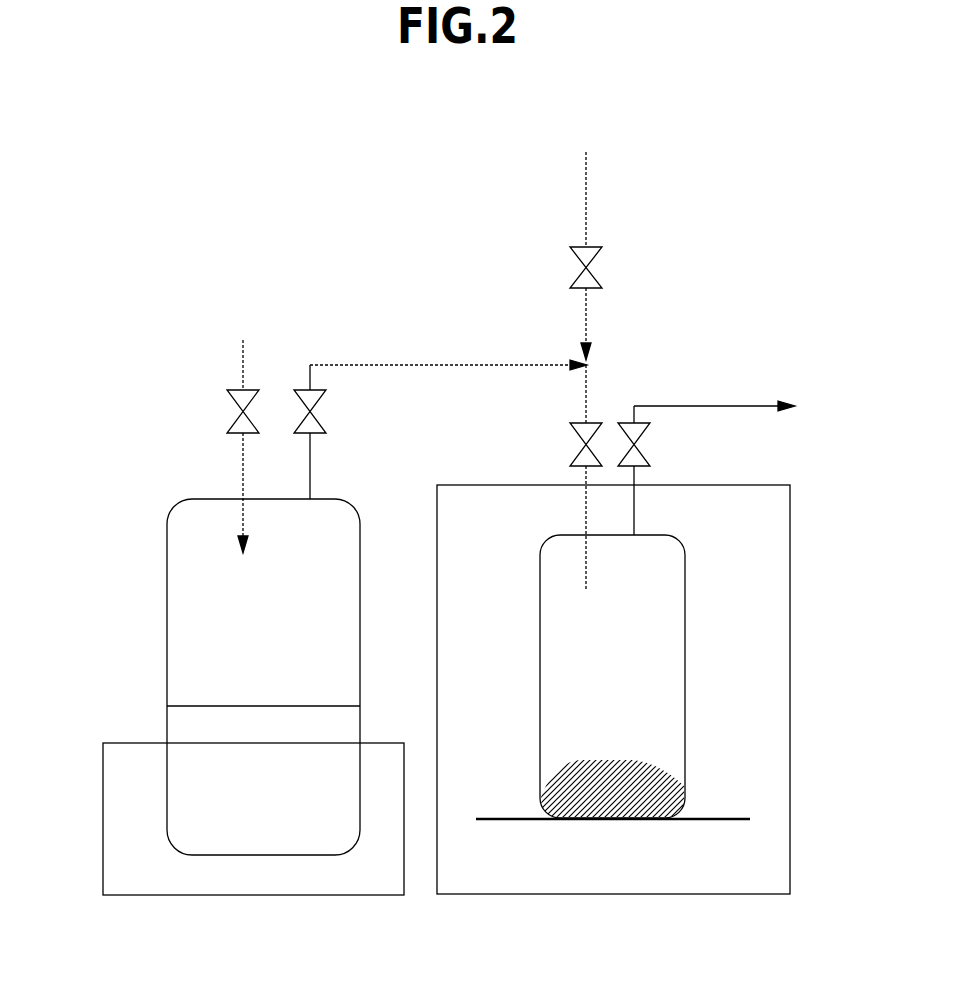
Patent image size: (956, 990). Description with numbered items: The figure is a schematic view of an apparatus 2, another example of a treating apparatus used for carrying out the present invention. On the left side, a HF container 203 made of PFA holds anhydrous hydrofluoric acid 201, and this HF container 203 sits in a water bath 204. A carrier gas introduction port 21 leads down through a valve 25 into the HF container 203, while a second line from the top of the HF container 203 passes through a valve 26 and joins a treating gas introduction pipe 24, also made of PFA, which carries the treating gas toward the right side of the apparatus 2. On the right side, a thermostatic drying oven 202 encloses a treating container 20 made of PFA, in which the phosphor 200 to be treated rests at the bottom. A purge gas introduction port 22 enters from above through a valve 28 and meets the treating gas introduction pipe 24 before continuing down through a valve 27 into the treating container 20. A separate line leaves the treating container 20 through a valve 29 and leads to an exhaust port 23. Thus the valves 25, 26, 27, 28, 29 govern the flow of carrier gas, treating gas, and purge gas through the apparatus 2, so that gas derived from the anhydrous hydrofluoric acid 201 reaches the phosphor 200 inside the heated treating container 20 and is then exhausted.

The apparatus 2 is at (150, 150).
The treating container 20 is at (686, 609).
The carrier gas introduction port 21 is at (242, 433).
The purge gas introduction port 22 is at (587, 358).
The exhaust port 23 is at (729, 408).
The treating gas introduction pipe 24 is at (445, 365).
The valve 25 is at (228, 411).
The valve 26 is at (326, 408).
The valve 27 is at (575, 440).
The valve 28 is at (598, 273).
The valve 29 is at (648, 432).
The phosphor 200 is at (640, 783).
The anhydrous hydrofluoric acid 201 is at (248, 757).
The thermostatic drying oven 202 is at (790, 718).
The HF container 203 is at (167, 634).
The water bath 204 is at (130, 857).